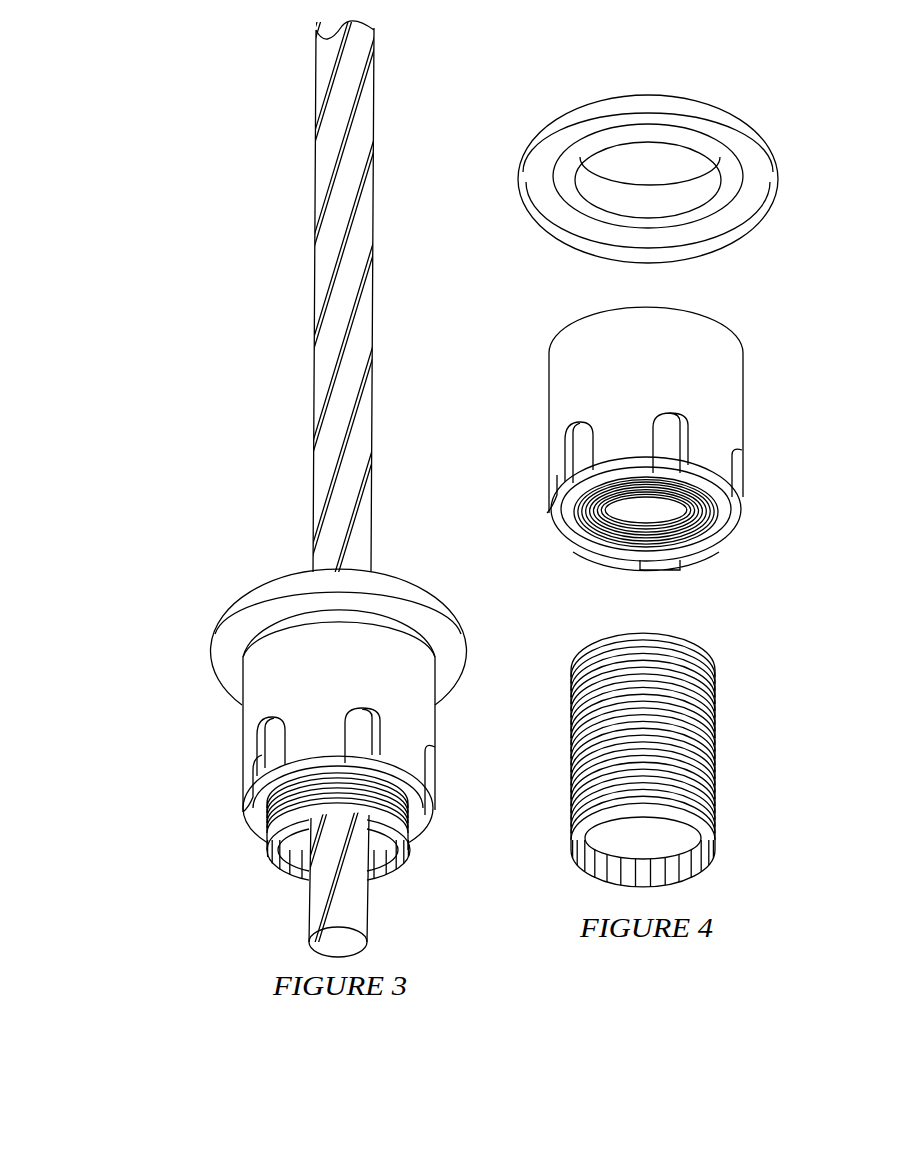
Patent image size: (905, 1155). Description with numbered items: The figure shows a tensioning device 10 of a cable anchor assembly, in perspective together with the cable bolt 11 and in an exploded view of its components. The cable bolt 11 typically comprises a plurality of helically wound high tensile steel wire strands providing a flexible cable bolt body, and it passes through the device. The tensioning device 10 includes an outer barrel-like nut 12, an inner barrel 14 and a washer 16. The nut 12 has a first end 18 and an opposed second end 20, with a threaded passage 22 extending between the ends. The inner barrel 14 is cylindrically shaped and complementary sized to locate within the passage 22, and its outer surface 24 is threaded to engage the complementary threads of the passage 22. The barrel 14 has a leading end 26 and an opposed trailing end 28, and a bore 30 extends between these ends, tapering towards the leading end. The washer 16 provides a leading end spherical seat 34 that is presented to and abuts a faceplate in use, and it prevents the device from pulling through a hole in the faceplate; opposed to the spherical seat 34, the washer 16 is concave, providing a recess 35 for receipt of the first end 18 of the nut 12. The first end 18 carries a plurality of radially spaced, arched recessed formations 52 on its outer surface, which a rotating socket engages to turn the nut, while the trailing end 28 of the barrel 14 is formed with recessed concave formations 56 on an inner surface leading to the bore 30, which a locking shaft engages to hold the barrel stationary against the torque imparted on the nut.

In FIG. 3, the tensioning device 10 is at (161, 718).
In FIG. 3, the cable bolt 11 is at (328, 245).
In FIG. 3, the outer barrel-like nut 12 is at (335, 732).
In FIG. 4, the outer barrel-like nut 12 is at (679, 436).
In FIG. 3, the inner barrel 14 is at (320, 861).
In FIG. 4, the inner barrel 14 is at (658, 759).
In FIG. 3, the washer 16 is at (270, 592).
In FIG. 4, the washer 16 is at (654, 162).
In FIG. 4, the first end 18 is at (710, 323).
In FIG. 4, the second end 20 is at (727, 535).
In FIG. 4, the threaded passage 22 is at (610, 510).
In FIG. 4, the outer surface 24 is at (697, 687).
In FIG. 4, the leading end 26 is at (692, 642).
In FIG. 3, the trailing end 28 is at (403, 873).
In FIG. 4, the trailing end 28 is at (705, 870).
In FIG. 4, the bore 30 is at (627, 838).
In FIG. 4, the leading end spherical seat 34 is at (578, 118).
In FIG. 4, the recess 35 is at (562, 209).
In FIG. 3, the recessed formations 52 is at (367, 750).
In FIG. 4, the recessed formations 52 is at (730, 498).
In FIG. 3, the recessed concave formations 56 is at (295, 868).
In FIG. 4, the recessed concave formations 56 is at (693, 877).